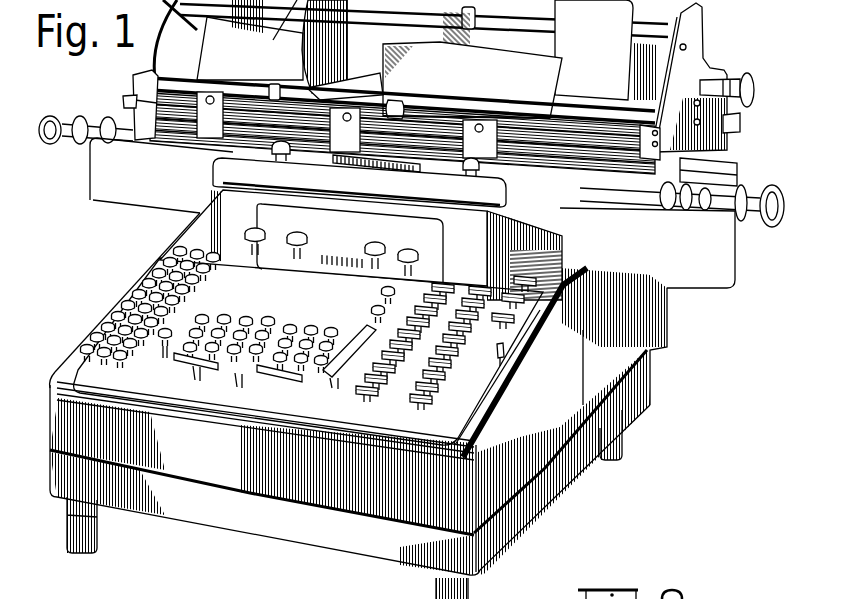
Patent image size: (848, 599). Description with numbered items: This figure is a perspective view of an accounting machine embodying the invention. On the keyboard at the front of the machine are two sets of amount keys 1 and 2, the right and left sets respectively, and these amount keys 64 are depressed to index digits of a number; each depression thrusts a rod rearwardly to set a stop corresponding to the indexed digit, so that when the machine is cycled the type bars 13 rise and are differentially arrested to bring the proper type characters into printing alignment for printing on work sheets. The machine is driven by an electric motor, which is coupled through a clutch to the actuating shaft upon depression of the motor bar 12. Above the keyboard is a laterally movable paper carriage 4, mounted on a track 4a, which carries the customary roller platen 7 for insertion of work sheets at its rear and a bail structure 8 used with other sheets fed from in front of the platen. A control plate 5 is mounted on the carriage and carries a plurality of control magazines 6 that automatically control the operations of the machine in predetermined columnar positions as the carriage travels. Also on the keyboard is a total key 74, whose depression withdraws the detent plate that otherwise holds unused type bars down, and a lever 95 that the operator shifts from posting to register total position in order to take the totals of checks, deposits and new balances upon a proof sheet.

The set of amount keys 1 is at (280, 326).
The set of amount keys 2 is at (266, 310).
The paper carriage 4 is at (694, 46).
The track 4a is at (730, 173).
The control plate 5 is at (728, 132).
The control magazines 6 is at (733, 120).
The roller platen 7 is at (527, 153).
The bail structure 8 is at (643, 130).
The motor bar 12 is at (352, 348).
The type bars 13 is at (407, 161).
The amount keys 64 is at (204, 319).
The total key 74 is at (451, 376).
The lever 95 is at (498, 348).